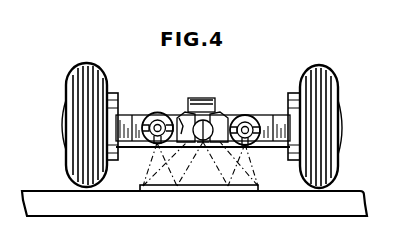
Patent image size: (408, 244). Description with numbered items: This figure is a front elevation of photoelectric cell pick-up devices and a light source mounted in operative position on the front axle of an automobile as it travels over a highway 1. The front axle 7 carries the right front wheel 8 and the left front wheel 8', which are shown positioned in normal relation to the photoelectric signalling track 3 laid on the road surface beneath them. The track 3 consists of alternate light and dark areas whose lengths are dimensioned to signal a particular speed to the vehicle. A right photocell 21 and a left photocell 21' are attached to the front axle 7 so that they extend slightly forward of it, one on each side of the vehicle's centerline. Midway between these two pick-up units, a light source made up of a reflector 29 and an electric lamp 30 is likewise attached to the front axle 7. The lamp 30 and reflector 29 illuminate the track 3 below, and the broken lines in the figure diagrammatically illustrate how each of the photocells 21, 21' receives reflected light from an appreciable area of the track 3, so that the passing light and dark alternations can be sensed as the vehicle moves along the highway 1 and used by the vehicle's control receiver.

The highway 1 is at (117, 216).
The photoelectric signal track 3 is at (143, 186).
The front axle 7 is at (262, 142).
The right front wheel 8 is at (81, 125).
The left front wheel 8' is at (322, 126).
The right photocell 21 is at (152, 117).
The left photocell 21' is at (253, 118).
The reflector 29 is at (181, 122).
The electric lamp 30 is at (203, 98).